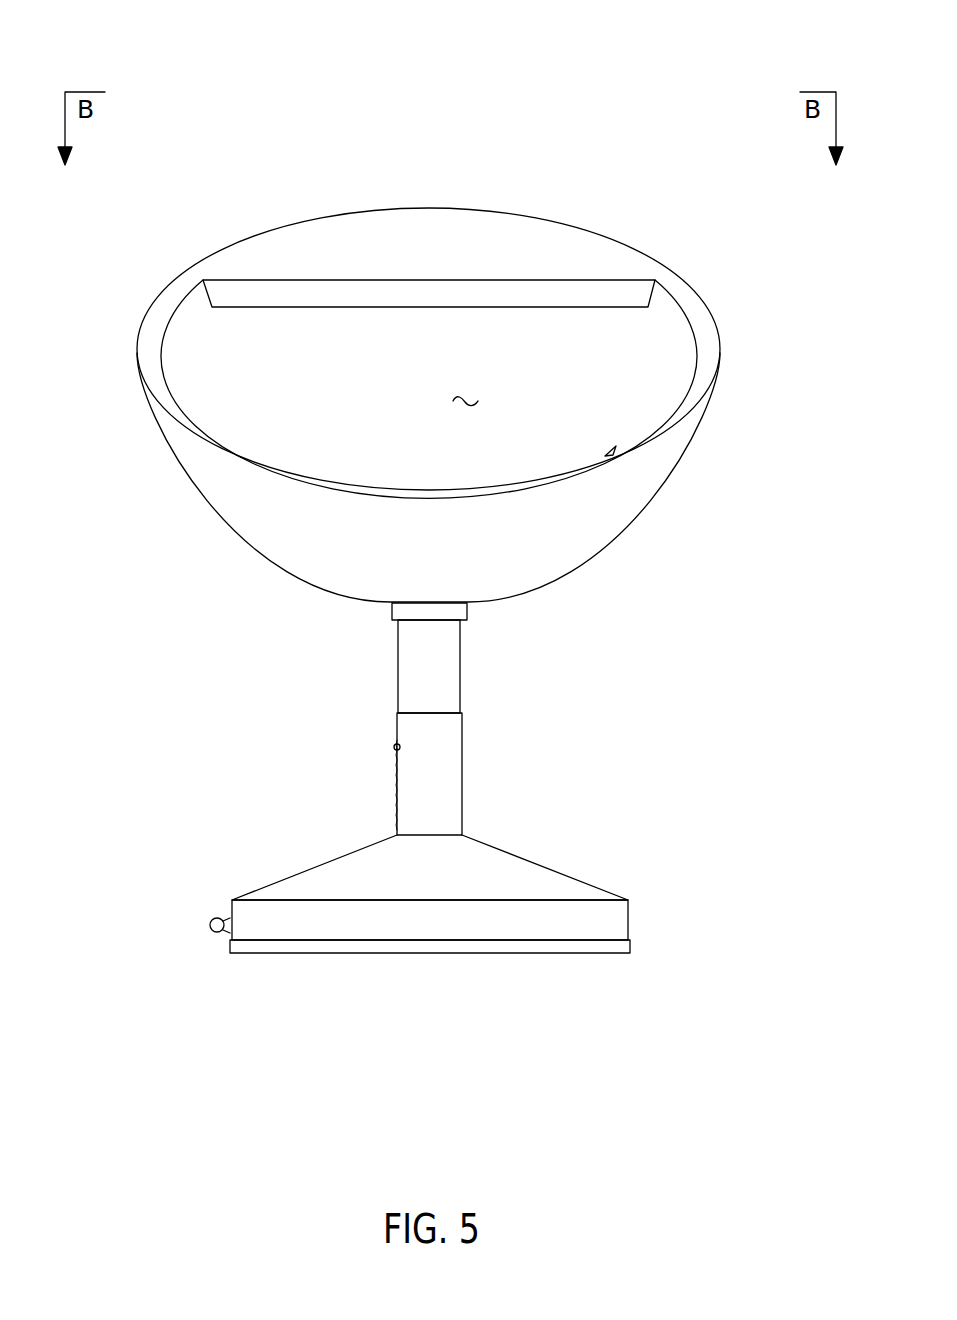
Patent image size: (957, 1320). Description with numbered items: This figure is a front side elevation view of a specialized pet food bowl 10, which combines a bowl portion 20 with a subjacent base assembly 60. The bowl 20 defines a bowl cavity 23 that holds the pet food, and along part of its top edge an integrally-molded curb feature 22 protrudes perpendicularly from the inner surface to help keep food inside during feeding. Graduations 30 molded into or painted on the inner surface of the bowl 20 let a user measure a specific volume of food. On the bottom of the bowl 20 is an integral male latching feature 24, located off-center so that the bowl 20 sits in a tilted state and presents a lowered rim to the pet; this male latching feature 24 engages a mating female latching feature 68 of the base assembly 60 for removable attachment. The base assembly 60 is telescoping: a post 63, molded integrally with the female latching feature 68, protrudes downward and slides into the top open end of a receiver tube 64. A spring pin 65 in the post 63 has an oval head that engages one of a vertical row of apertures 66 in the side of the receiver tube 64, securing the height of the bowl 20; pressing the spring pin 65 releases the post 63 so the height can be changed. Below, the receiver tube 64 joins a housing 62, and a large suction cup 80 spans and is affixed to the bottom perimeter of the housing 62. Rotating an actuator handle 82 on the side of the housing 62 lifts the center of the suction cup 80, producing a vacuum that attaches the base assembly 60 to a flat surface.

The specialized pet food bowl 10 is at (243, 150).
The bowl portion 20 is at (168, 288).
The curb feature 22 is at (458, 272).
The bowl cavity 23 is at (478, 400).
The graduation 30 is at (612, 452).
The male latching feature 24 is at (470, 610).
The female latching feature 68 is at (429, 611).
The base assembly 60 is at (392, 712).
The post 63 is at (463, 692).
The receiver tube 64 is at (463, 762).
The spring pin 65 is at (394, 745).
The aperture 66 is at (397, 814).
The housing 62 is at (563, 888).
The suction cup 80 is at (520, 955).
The actuator handle 82 is at (213, 931).